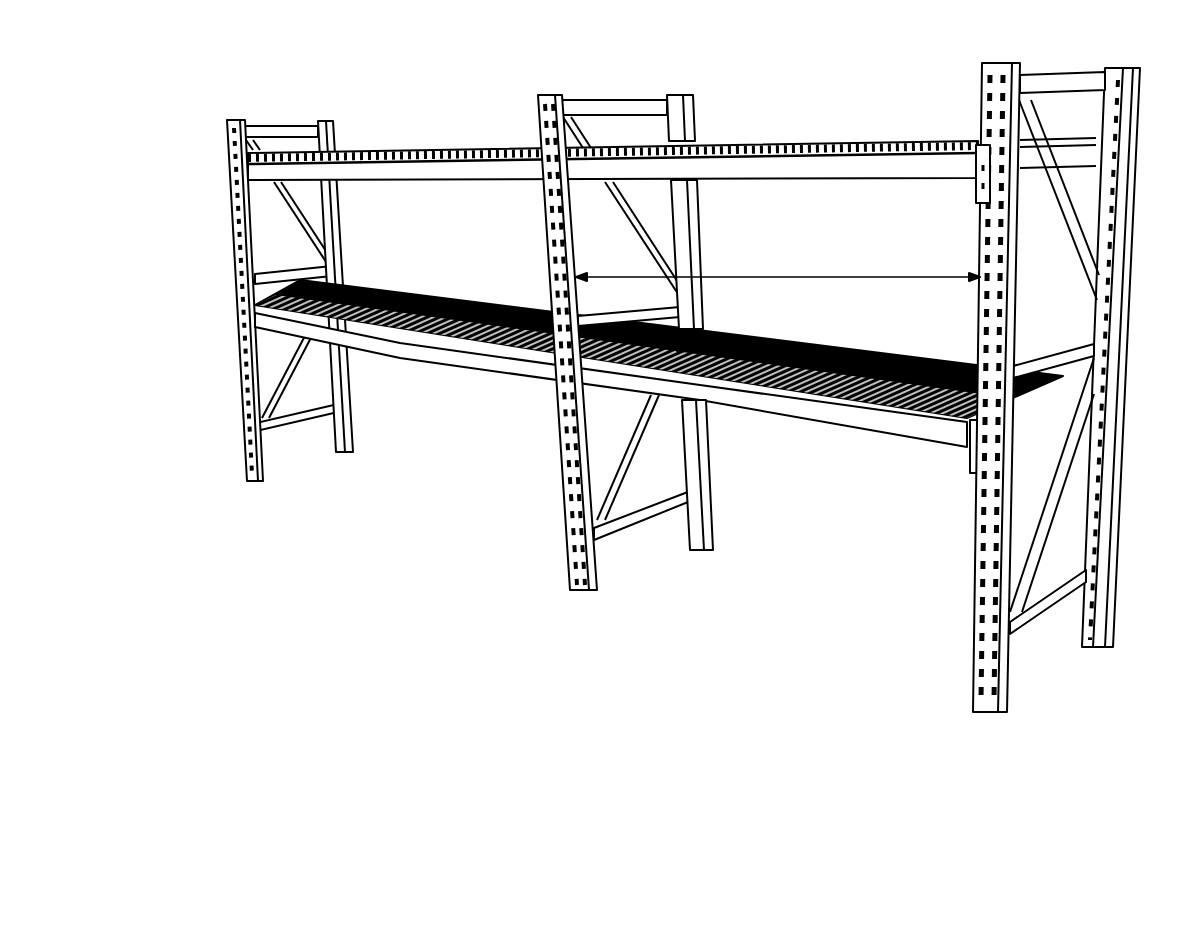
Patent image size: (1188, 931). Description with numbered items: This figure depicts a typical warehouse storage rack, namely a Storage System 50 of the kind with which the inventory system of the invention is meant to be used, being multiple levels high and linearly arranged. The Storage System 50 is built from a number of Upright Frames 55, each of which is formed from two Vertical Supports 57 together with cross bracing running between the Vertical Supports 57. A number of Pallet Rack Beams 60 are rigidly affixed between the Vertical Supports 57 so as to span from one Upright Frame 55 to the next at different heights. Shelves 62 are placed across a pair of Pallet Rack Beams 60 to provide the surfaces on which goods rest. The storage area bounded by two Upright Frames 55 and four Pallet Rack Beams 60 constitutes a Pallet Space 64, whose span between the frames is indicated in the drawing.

The storage system 50 is at (226, 110).
The upright frame 55 is at (354, 459).
The vertical support 57 is at (579, 592).
The pallet rack beam 60 is at (828, 428).
The shelf 62 is at (846, 349).
The pallet space 64 is at (798, 276).